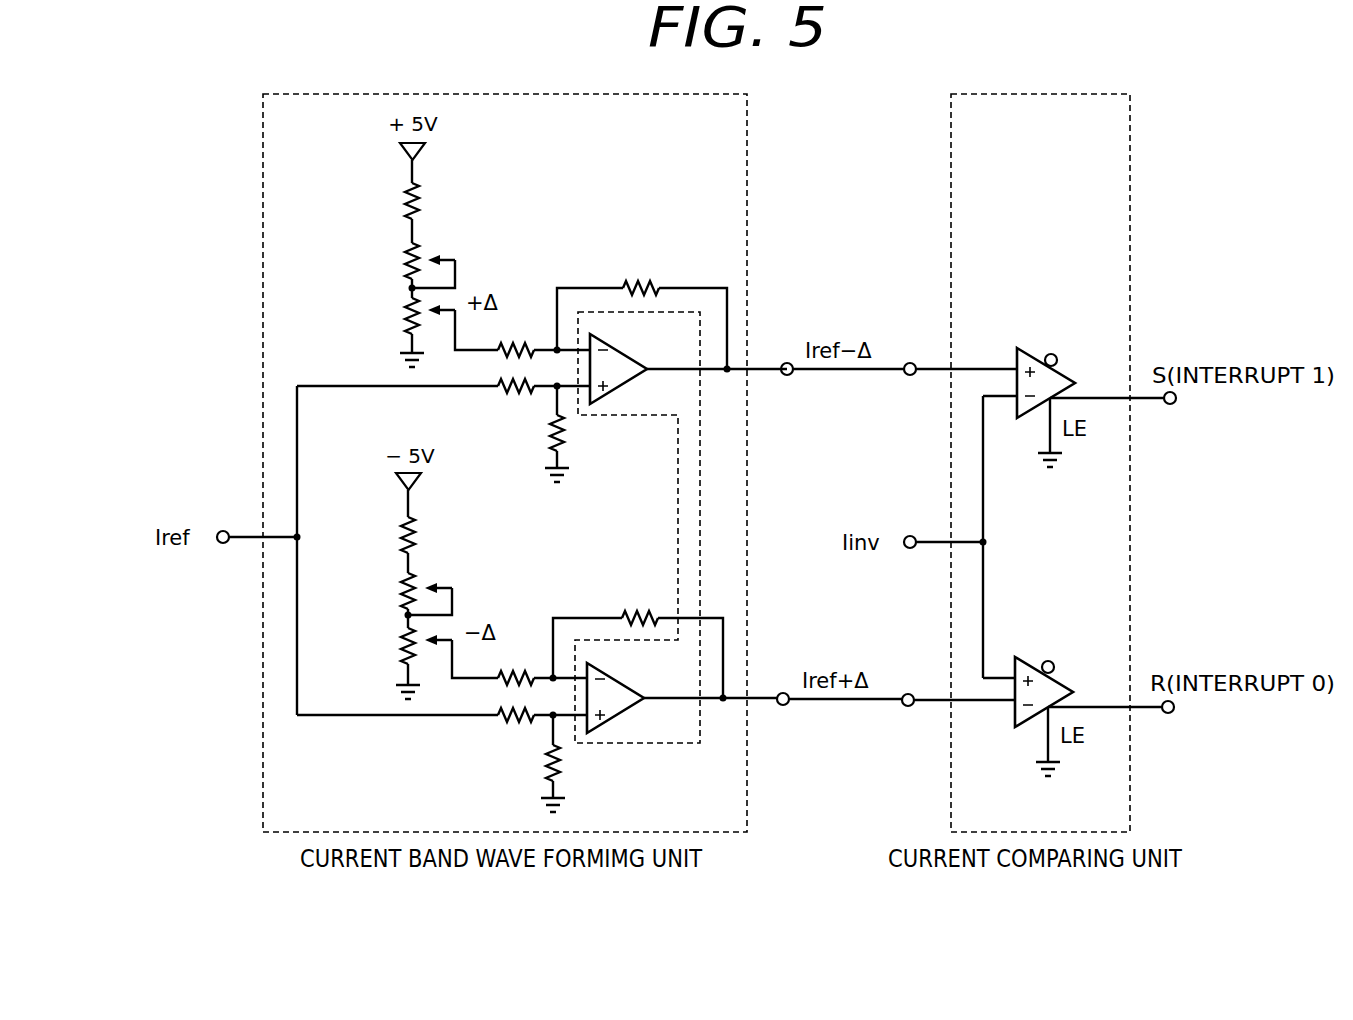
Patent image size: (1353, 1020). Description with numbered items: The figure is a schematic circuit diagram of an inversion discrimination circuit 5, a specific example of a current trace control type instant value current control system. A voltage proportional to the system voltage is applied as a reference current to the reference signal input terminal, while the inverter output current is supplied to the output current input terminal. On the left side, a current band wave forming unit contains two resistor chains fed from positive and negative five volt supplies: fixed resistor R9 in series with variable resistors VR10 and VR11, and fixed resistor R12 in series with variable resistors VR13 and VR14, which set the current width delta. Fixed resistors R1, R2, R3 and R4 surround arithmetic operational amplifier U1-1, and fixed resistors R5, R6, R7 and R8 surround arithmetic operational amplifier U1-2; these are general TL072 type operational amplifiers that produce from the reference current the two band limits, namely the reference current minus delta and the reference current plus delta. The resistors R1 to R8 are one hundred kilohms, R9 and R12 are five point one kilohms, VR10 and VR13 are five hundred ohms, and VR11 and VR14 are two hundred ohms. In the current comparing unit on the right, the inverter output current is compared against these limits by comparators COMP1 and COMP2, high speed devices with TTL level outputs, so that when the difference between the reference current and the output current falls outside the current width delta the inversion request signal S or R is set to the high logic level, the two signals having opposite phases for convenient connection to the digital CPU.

The inversion discrimination circuit 5 is at (840, 237).
The fixed resistor R1 is at (518, 341).
The fixed resistor R2 is at (516, 396).
The fixed resistor R3 is at (642, 286).
The fixed resistor R4 is at (567, 438).
The fixed resistor R5 is at (517, 671).
The fixed resistor R6 is at (514, 725).
The fixed resistor R7 is at (640, 614).
The fixed resistor R8 is at (563, 768).
The fixed resistor R9 is at (398, 200).
The fixed resistor R12 is at (395, 532).
The variable resistor VR10 is at (398, 260).
The variable resistor VR11 is at (398, 312).
The variable resistor VR13 is at (395, 588).
The variable resistor VR14 is at (395, 640).
The arithmetic operational amplifier U1-1 is at (618, 346).
The arithmetic operational amplifier U1-2 is at (614, 678).
The comparator COMP1 is at (1037, 356).
The comparator COMP2 is at (1035, 662).